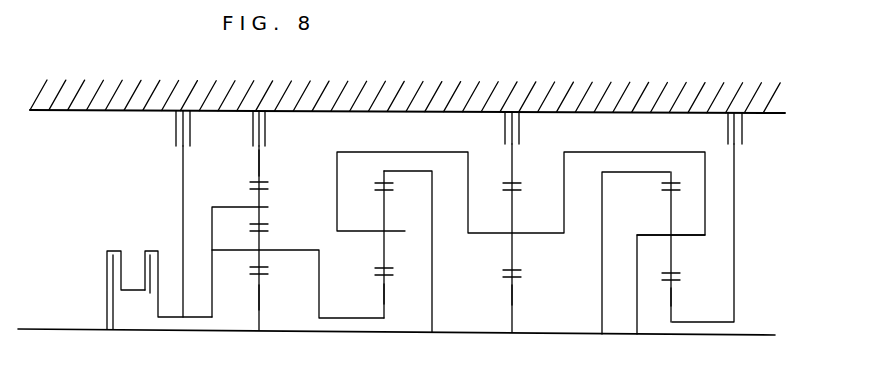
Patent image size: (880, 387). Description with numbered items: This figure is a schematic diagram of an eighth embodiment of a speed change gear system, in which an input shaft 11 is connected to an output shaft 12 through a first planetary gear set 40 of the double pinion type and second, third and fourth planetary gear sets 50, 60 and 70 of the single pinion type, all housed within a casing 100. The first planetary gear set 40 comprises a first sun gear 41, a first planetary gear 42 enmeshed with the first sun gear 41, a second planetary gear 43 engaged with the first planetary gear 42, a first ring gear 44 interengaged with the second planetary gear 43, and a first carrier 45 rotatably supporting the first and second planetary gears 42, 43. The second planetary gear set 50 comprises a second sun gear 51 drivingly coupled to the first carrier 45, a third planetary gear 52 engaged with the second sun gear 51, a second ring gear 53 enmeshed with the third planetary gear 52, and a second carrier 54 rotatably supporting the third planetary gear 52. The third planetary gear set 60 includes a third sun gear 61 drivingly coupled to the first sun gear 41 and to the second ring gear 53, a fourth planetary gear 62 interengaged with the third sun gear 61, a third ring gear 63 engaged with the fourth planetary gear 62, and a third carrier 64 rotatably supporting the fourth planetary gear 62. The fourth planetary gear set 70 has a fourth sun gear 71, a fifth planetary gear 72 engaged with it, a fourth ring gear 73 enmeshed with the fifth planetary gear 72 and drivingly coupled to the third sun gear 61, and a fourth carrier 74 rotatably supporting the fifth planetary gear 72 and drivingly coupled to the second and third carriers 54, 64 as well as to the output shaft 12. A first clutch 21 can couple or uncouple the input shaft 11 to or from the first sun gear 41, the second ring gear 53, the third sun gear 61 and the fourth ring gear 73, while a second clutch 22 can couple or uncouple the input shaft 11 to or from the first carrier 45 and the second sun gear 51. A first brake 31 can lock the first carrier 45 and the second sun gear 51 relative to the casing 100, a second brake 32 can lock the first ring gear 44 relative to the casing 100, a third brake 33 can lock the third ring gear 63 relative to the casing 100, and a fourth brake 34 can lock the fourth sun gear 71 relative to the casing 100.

The casing 100 is at (432, 108).
The input shaft 11 is at (57, 330).
The output shaft 12 is at (652, 336).
The first clutch 21 is at (110, 246).
The second clutch 22 is at (152, 246).
The first brake 31 is at (174, 122).
The second brake 32 is at (251, 122).
The third brake 33 is at (521, 120).
The fourth brake 34 is at (745, 121).
The first planetary gear set 40 is at (264, 299).
The first sun gear 41 is at (257, 293).
The first planetary gear 42 is at (260, 258).
The second planetary gear 43 is at (260, 215).
The first ring gear 44 is at (260, 164).
The first carrier 45 is at (239, 186).
The second planetary gear set 50 is at (391, 304).
The second sun gear 51 is at (385, 292).
The third planetary gear 52 is at (385, 250).
The second ring gear 53 is at (392, 173).
The second carrier 54 is at (521, 243).
The third planetary gear set 60 is at (516, 311).
The third sun gear 61 is at (513, 292).
The fourth planetary gear 62 is at (513, 250).
The third ring gear 63 is at (514, 158).
The third carrier 64 is at (572, 253).
The fourth planetary gear set 70 is at (670, 306).
The fourth sun gear 71 is at (674, 293).
The fifth planetary gear 72 is at (673, 253).
The fourth ring gear 73 is at (665, 178).
The fourth carrier 74 is at (671, 221).